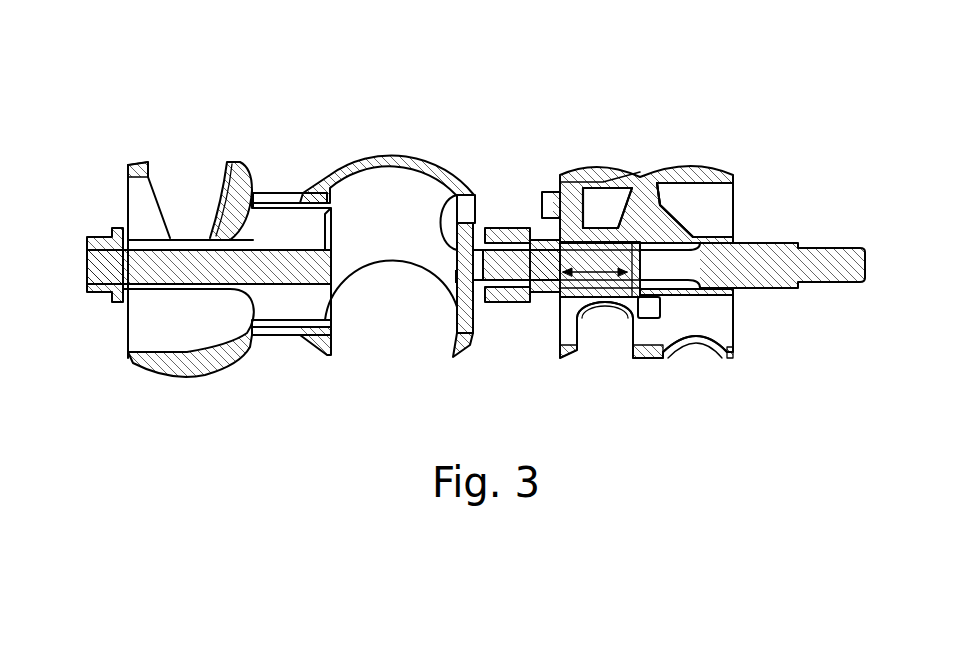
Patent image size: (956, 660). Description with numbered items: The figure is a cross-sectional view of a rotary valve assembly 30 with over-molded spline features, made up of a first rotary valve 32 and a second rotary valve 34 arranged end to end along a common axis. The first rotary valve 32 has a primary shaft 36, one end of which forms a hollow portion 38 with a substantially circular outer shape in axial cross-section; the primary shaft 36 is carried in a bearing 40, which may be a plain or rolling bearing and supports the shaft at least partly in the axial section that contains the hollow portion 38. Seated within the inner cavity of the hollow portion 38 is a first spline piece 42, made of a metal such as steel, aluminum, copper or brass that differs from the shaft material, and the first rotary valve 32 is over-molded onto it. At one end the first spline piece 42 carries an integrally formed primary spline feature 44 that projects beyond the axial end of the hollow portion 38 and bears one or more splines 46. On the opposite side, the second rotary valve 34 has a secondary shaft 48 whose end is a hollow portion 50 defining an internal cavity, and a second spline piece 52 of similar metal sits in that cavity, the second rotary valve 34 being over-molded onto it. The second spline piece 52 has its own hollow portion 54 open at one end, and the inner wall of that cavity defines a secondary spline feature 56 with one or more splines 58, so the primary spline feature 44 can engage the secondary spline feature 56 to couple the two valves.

The rotary valve assembly 30 is at (515, 124).
The first rotary valve 32 is at (395, 141).
The second rotary valve 34 is at (729, 158).
The primary shaft 36 is at (483, 293).
The hollow portion 38 is at (543, 283).
The bearing 40 is at (498, 228).
The first spline piece 42 is at (512, 260).
The primary spline feature 44 is at (575, 258).
The splines 46 is at (625, 233).
The splines 58 is at (695, 210).
The secondary shaft 48 is at (685, 290).
The hollow portion 50 is at (595, 297).
The second spline piece 52 is at (607, 248).
The hollow portion 54 is at (583, 245).
The secondary spline feature 56 is at (620, 290).